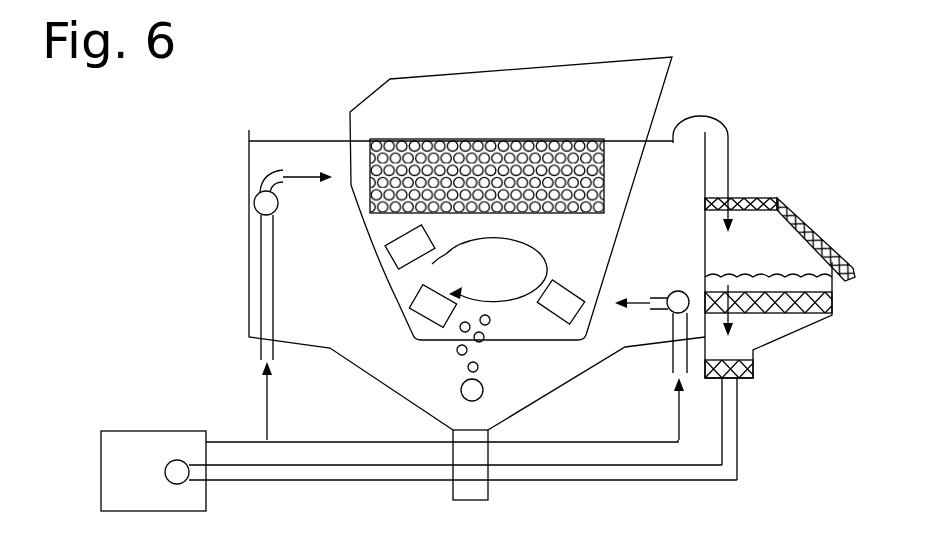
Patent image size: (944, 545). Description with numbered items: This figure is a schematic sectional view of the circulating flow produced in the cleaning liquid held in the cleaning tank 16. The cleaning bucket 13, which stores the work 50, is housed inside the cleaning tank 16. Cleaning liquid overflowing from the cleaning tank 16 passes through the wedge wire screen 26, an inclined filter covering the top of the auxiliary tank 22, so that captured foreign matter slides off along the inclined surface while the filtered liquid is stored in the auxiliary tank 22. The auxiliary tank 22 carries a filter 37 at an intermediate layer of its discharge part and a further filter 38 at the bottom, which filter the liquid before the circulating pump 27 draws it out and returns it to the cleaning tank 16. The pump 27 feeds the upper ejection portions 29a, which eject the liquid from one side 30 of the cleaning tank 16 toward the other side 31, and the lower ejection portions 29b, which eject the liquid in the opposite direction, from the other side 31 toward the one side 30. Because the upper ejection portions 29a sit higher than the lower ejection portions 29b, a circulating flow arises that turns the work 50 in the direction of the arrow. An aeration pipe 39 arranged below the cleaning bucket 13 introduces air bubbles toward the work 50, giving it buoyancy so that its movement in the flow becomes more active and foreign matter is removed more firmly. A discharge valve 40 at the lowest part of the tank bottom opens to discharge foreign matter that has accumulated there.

The cleaning bucket 13 is at (568, 65).
The cleaning tank 16 is at (368, 363).
The auxiliary tank 22 is at (760, 330).
The wedge wire screen 26 is at (813, 240).
The circulating pump 27 is at (101, 483).
The upper ejection portions 29a is at (274, 253).
The lower ejection portions 29b is at (673, 357).
The one side 30 is at (249, 289).
The other side 31 is at (705, 218).
The filter 37 is at (820, 313).
The filter 38 is at (740, 380).
The aeration pipe 39 is at (461, 393).
The discharge valve 40 is at (453, 483).
The work 50 is at (580, 291).